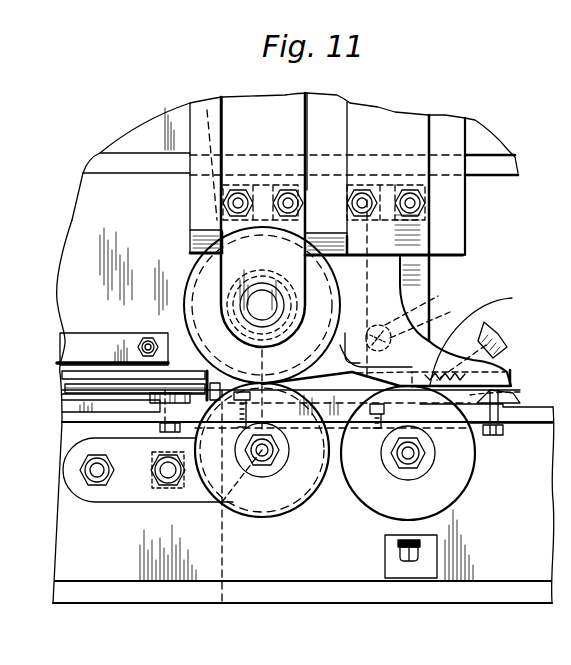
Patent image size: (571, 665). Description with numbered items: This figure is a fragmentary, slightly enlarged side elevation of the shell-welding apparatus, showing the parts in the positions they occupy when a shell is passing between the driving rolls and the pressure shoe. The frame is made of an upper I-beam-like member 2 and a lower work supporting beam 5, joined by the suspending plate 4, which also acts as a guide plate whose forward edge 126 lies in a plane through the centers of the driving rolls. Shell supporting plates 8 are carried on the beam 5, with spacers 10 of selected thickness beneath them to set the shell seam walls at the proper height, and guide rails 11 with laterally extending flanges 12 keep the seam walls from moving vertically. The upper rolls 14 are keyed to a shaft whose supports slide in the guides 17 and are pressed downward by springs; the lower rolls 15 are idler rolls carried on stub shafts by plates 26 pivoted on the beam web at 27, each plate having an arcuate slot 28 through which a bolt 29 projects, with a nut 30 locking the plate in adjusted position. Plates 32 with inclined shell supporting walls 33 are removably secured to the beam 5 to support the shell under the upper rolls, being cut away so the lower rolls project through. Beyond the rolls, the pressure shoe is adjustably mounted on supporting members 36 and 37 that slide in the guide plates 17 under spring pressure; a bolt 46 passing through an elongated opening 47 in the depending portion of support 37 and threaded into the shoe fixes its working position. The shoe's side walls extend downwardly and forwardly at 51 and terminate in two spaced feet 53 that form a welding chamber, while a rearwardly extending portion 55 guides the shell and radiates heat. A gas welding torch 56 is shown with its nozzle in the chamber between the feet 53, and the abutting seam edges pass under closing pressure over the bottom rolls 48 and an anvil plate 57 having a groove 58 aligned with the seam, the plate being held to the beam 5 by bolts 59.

The upper beam 2 is at (480, 140).
The plate 4 is at (95, 225).
The lower work supporting beam 5 is at (87, 537).
The shell supporting plates 8 is at (75, 382).
The spacers 10 is at (150, 397).
The guide rails 11 is at (95, 335).
The flanges 12 is at (85, 363).
The upper rolls 14 is at (208, 280).
The lower rolls 15 is at (282, 483).
The guides 17 is at (450, 199).
The plates 26 is at (190, 497).
The pivot 27 is at (97, 470).
The arcuate slots 28 is at (168, 480).
The bolts 29 is at (165, 470).
The nuts 30 is at (158, 472).
The plates 32 is at (222, 390).
The inclined shell supporting walls 33 is at (312, 381).
The supporting member 36 is at (418, 243).
The supporting member 37 is at (413, 283).
The bolt 46 is at (420, 305).
The elongated opening 47 is at (429, 320).
The bottom rolls 48 is at (465, 472).
The side walls extension 51 is at (480, 337).
The feet 53 is at (497, 365).
The rearwardly extending portion 55 is at (364, 341).
The gas welding torch 56 is at (493, 333).
The anvil plate 57 is at (510, 400).
The groove 58 is at (523, 373).
The bolts 59 is at (512, 443).
The forward edge 126 is at (306, 345).